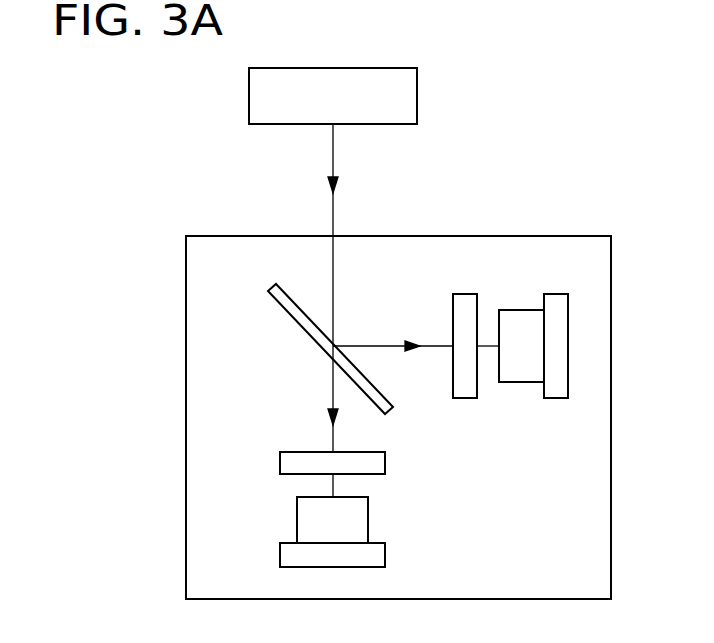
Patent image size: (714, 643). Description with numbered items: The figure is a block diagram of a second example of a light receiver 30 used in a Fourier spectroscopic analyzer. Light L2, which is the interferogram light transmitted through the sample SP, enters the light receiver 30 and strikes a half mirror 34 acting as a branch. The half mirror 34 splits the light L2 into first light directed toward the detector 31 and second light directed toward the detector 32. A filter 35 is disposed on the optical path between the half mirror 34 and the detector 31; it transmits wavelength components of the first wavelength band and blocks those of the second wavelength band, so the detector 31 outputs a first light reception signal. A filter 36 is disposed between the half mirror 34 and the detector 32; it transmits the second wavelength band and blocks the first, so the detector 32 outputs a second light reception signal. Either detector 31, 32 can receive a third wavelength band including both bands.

The sample SP is at (417, 95).
The light L2 is at (333, 157).
The light receiver 30 is at (545, 236).
The half mirror 34 is at (277, 305).
The filter 35 is at (465, 398).
The detector 31 is at (521, 382).
The filter 36 is at (387, 462).
The detector 32 is at (368, 517).